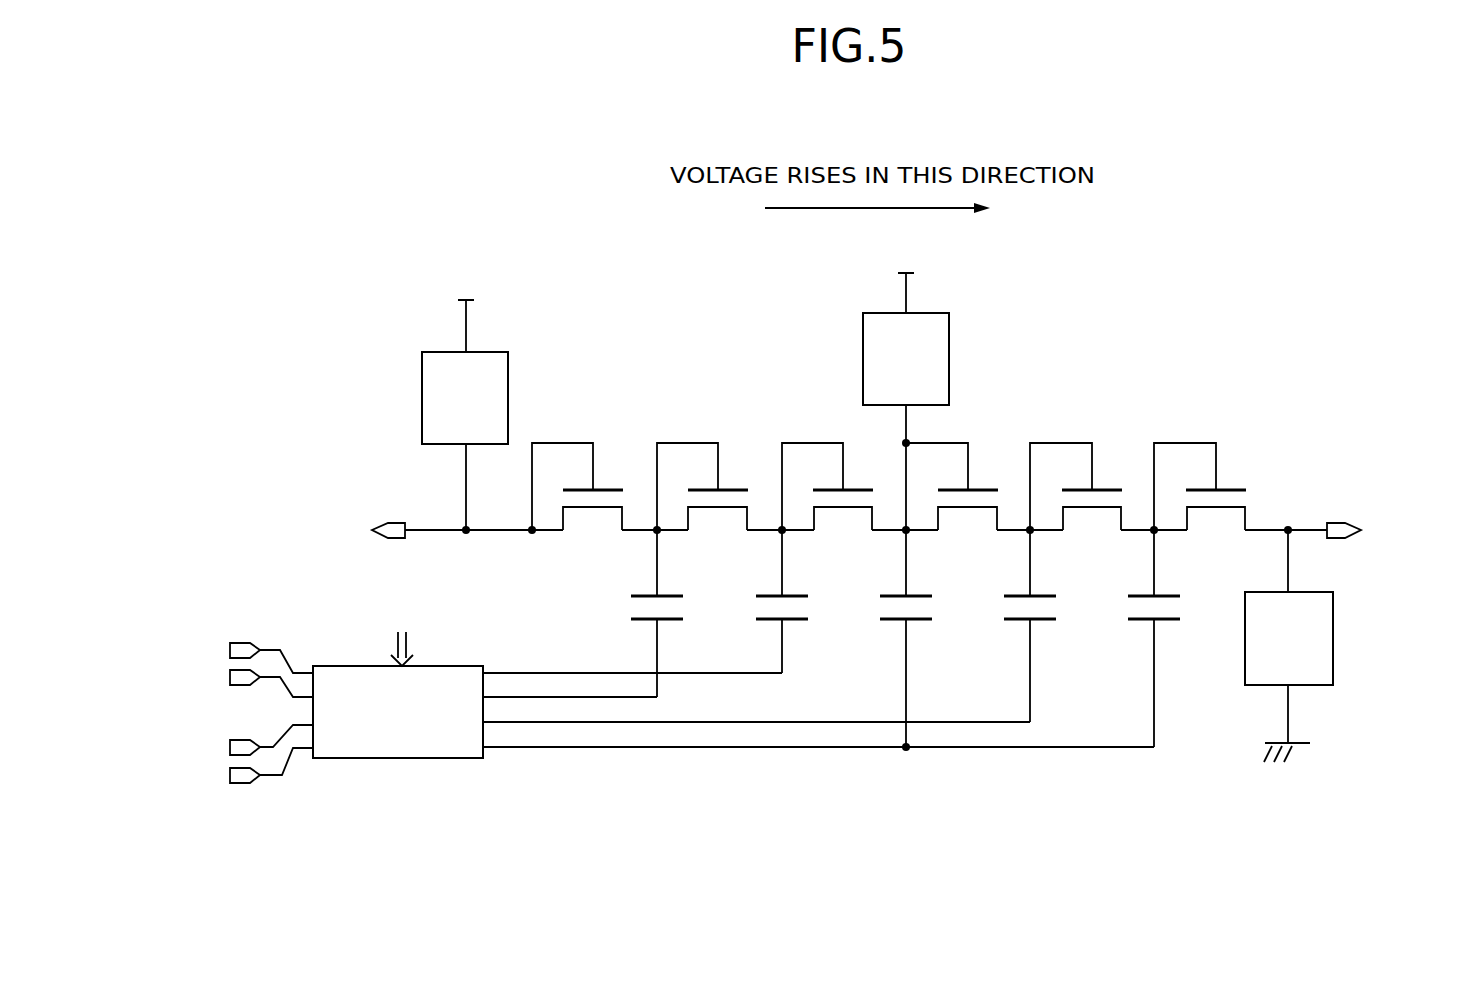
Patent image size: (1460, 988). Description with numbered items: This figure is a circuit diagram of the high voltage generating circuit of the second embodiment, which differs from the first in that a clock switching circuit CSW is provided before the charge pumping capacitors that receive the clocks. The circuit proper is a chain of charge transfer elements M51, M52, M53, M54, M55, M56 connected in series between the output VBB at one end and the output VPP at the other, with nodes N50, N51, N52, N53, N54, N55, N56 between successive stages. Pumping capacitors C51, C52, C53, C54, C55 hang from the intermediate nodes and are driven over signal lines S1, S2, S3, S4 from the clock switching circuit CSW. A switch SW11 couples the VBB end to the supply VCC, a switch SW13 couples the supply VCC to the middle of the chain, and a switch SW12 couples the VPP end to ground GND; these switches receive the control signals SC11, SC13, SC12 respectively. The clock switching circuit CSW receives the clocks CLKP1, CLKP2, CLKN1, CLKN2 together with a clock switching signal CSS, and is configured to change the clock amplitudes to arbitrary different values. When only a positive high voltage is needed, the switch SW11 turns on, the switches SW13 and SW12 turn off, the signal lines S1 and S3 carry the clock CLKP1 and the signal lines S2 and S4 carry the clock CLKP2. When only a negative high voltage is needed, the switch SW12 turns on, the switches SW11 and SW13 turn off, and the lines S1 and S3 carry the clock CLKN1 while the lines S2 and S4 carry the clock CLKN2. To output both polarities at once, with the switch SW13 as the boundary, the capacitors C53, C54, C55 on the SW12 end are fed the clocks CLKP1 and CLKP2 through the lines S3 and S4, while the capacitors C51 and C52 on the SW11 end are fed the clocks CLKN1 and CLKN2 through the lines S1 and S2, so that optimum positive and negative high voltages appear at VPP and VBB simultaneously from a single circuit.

The switch SW11 is at (465, 415).
The switch SW12 is at (1289, 636).
The switch SW13 is at (906, 378).
The switch control signal for SW11 SC11 is at (410, 403).
The switch control signal for SW12 SC12 is at (1345, 639).
The switch control signal for SW13 SC13 is at (851, 360).
The charge transfer MOS transistor M51 is at (577, 472).
The charge transfer MOS transistor M52 is at (702, 472).
The charge transfer MOS transistor M53 is at (827, 472).
The charge transfer MOS transistor M54 is at (952, 472).
The charge transfer MOS transistor M55 is at (1076, 472).
The charge transfer MOS transistor M56 is at (1200, 472).
The capacitor C51 is at (639, 613).
The capacitor C52 is at (764, 601).
The capacitor C53 is at (890, 640).
The capacitor C54 is at (1009, 626).
The capacitor C55 is at (1136, 638).
The node N50 is at (492, 550).
The node N51 is at (628, 544).
The node N52 is at (753, 544).
The node N53 is at (878, 500).
The node N54 is at (999, 544).
The node N55 is at (1125, 544).
The node N56 is at (1288, 515).
The signal line S1 is at (507, 672).
The signal line S2 is at (522, 697).
The signal line S3 is at (528, 722).
The signal line S4 is at (552, 747).
The clock switching circuit CSW is at (457, 759).
The clock switching signal CSS is at (402, 635).
The clock CLKP1 is at (230, 655).
The clock CLKP2 is at (230, 681).
The clock CLKN1 is at (230, 742).
The clock CLKN2 is at (230, 768).
The supply voltage terminal VCC is at (686, 276).
The output VBB is at (390, 512).
The output VPP is at (1358, 516).
The ground GND is at (1282, 769).